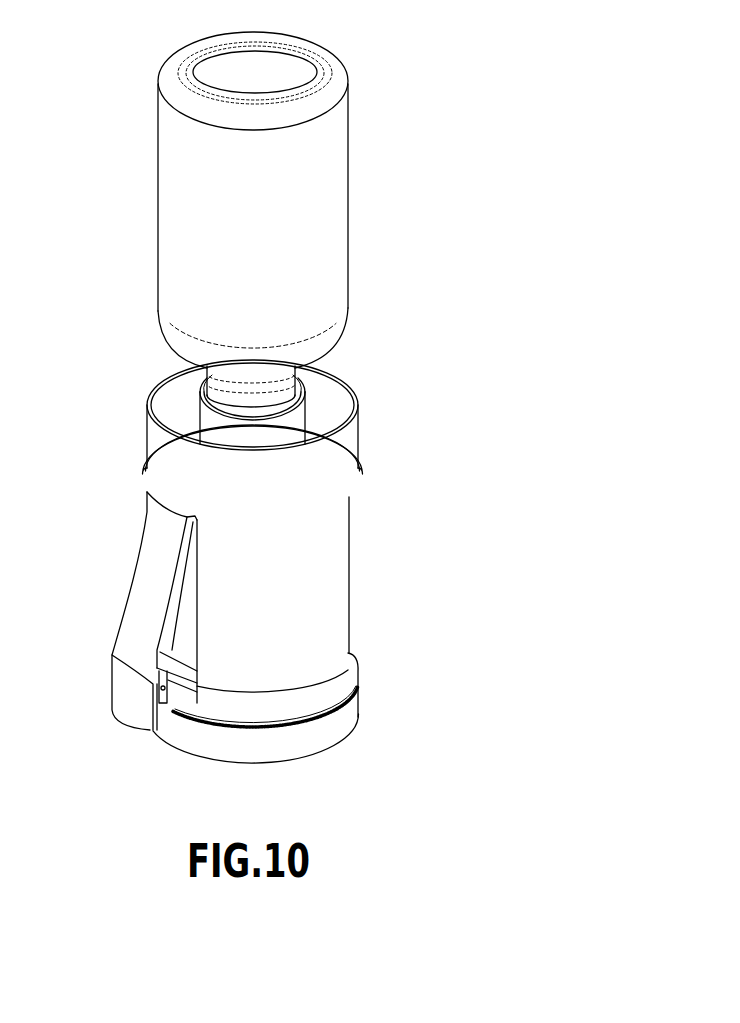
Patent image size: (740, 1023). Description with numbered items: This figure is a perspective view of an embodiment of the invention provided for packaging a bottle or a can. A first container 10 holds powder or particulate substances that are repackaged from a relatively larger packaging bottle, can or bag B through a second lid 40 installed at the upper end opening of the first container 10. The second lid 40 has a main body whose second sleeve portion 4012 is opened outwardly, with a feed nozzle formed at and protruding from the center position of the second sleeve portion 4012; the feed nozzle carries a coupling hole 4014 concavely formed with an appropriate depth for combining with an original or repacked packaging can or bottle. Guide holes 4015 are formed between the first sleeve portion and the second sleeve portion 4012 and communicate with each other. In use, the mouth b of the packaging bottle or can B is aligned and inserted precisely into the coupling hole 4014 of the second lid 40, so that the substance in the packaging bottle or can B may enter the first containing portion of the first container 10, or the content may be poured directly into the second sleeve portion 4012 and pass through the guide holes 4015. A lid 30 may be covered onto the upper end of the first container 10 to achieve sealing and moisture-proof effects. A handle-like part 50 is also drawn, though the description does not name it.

The packaging bottle, can or bag B is at (170, 210).
The mouth b is at (298, 386).
The coupling hole 4014 is at (313, 342).
The guide holes 4015 is at (203, 437).
The second sleeve portion 4012 is at (173, 417).
The second lid 40 is at (158, 453).
The first container 10 is at (218, 568).
The lid 30 is at (190, 743).
The handle 50 is at (127, 630).